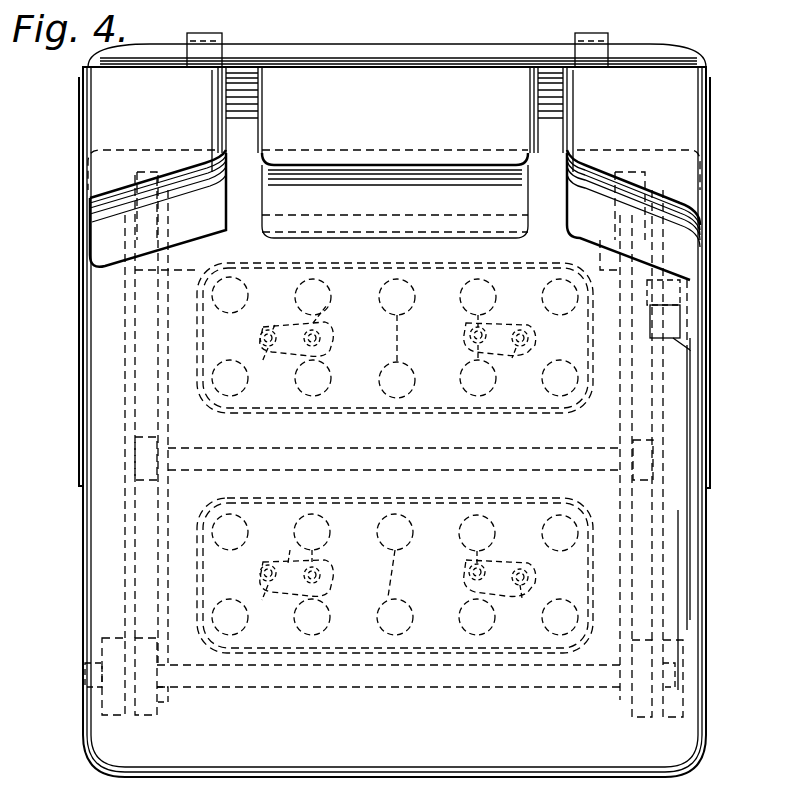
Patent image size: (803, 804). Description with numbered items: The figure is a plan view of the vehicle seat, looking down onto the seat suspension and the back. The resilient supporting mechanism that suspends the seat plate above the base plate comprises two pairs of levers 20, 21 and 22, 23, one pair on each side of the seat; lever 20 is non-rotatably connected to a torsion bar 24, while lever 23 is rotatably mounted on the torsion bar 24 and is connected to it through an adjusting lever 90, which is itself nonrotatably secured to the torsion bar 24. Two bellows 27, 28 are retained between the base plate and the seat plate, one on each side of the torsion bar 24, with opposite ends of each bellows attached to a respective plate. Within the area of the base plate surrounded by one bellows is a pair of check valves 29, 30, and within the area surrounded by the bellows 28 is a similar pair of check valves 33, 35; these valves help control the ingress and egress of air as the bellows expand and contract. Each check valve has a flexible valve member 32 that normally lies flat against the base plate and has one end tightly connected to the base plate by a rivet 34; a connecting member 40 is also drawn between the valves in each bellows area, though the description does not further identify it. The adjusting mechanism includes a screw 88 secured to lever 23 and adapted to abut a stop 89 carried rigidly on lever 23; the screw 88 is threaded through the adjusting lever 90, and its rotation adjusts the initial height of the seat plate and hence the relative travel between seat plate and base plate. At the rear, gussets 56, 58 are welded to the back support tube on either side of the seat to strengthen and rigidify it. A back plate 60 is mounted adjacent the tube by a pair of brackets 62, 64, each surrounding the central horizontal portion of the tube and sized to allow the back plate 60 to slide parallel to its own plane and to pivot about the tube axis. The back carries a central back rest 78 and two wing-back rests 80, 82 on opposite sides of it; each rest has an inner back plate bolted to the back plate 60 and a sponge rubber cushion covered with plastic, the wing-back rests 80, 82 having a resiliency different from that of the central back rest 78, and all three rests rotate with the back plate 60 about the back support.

The lever 20 is at (127, 360).
The lever 21 is at (158, 388).
The lever 22 is at (668, 580).
The lever 23 is at (665, 530).
The torsion bar 24 is at (472, 447).
The bellows 27 is at (433, 507).
The bellows 28 is at (447, 392).
The check valve 29 is at (318, 567).
The check valve 30 is at (469, 578).
The flexible valve member 32 is at (275, 350).
The check valve 33 is at (327, 306).
The rivet 34 is at (277, 330).
The check valve 35 is at (470, 333).
The connecting member 40 is at (330, 378).
The gusset 56 is at (79, 295).
The gusset 58 is at (710, 213).
The back plate 60 is at (282, 65).
The bracket 62 is at (212, 52).
The bracket 64 is at (600, 50).
The central back rest 78 is at (395, 170).
The wing-back rest 80 is at (157, 184).
The wing-back rest 82 is at (633, 191).
The screw 88 is at (697, 292).
The stop 89 is at (690, 348).
The adjusting lever 90 is at (688, 390).